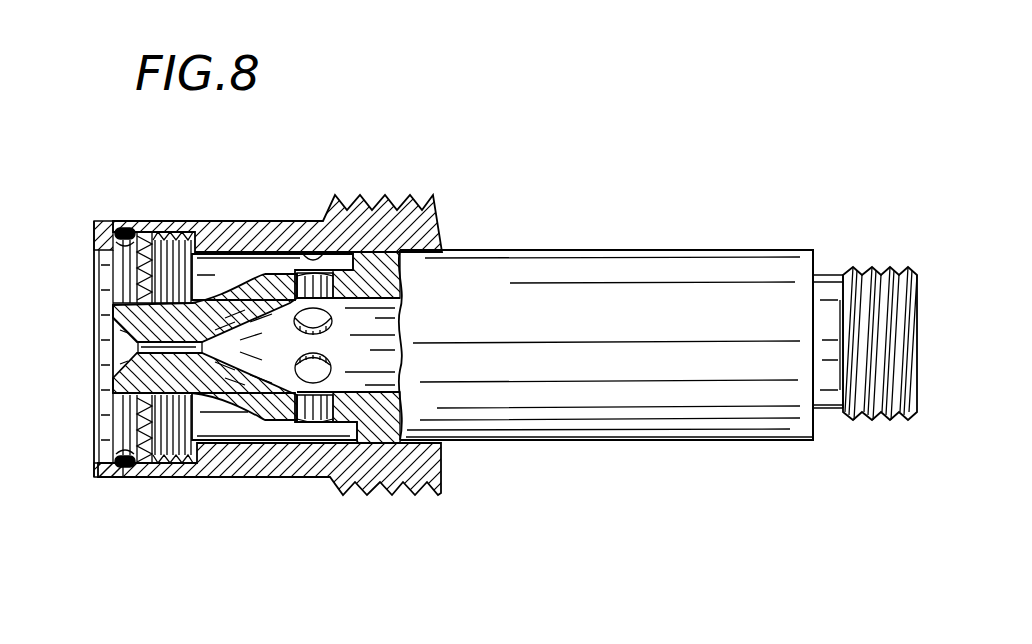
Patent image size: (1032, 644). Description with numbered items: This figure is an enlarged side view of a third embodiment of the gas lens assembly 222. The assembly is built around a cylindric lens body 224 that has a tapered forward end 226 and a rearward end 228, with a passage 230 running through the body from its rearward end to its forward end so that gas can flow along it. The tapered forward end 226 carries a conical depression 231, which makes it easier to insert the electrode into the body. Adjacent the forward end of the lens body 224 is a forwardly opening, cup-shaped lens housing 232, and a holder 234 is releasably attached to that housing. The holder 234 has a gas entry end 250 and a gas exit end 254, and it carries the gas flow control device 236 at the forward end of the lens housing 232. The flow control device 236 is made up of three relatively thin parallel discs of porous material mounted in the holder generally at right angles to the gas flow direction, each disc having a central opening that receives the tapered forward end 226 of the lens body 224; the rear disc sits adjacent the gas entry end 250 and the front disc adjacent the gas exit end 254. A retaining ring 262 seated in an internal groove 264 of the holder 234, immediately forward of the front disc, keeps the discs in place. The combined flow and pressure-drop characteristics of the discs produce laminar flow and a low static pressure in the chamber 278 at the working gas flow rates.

The gas lens assembly 222 is at (588, 235).
The lens body 224 is at (683, 425).
The tapered forward end 226 is at (120, 393).
The rearward end 228 is at (717, 260).
The passage 230 is at (207, 455).
The conical depression 231 is at (117, 326).
The lens housing 232 is at (413, 226).
The holder 234 is at (208, 222).
The gas flow control device 236 is at (157, 483).
The gas entry end 250 is at (277, 473).
The gas exit end 254 is at (103, 473).
The retaining ring 262 is at (135, 473).
The internal groove 264 is at (138, 222).
The chamber 278 is at (332, 255).